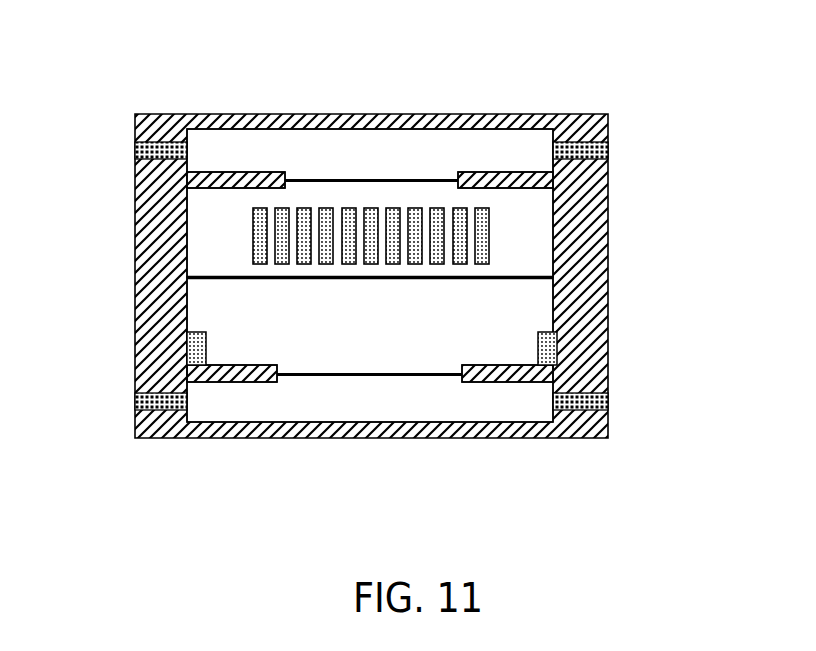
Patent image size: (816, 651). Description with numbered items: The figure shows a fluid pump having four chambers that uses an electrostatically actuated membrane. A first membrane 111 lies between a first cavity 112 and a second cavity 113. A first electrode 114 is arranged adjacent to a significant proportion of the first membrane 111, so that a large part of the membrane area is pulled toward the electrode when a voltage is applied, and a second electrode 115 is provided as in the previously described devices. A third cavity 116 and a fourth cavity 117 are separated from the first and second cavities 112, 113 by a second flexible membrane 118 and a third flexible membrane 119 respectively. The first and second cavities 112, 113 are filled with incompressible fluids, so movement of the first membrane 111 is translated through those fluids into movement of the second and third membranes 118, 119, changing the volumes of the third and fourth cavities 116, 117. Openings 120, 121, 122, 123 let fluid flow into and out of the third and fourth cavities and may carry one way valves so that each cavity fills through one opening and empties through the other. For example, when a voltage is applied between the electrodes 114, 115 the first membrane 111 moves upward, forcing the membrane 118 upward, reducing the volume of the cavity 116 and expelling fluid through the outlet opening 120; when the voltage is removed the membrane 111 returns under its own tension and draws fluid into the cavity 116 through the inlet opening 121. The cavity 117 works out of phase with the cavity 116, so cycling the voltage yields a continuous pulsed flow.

The first membrane 111 is at (537, 272).
The first cavity 112 is at (213, 218).
The second cavity 113 is at (213, 302).
The first electrode 114 is at (487, 207).
The second electrode 115 is at (557, 348).
The third cavity 116 is at (243, 138).
The fourth cavity 117 is at (215, 398).
The second flexible membrane 118 is at (358, 178).
The third flexible membrane 119 is at (343, 373).
The opening 120 is at (137, 152).
The opening 121 is at (610, 157).
The opening 122 is at (605, 407).
The opening 123 is at (132, 403).